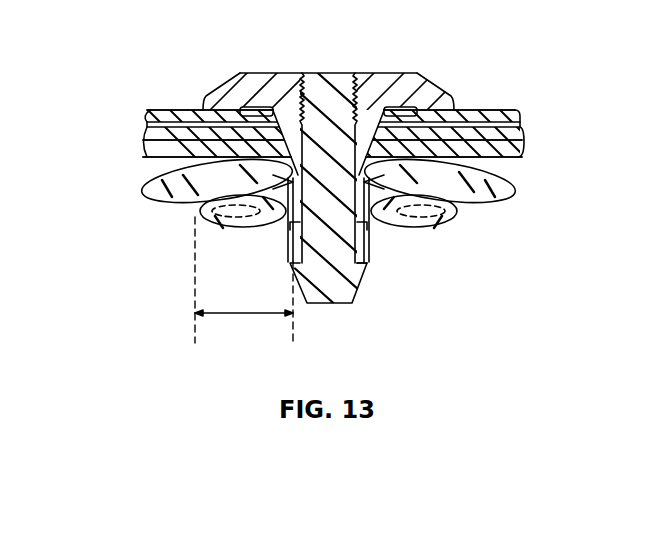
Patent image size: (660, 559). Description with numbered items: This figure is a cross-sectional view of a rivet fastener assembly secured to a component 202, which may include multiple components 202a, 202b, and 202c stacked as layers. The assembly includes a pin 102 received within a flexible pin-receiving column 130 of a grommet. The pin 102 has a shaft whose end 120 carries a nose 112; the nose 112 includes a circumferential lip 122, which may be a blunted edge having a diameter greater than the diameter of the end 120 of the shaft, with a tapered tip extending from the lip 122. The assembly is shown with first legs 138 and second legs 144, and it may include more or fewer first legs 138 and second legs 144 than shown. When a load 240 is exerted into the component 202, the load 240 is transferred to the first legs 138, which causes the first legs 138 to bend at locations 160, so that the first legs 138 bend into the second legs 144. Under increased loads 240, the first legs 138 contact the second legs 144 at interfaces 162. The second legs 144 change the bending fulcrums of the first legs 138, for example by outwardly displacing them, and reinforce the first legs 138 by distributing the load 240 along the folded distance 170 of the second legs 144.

The load 240 is at (162, 63).
The interfaces 162 is at (236, 188).
The component 202 is at (528, 108).
The component 202a is at (510, 108).
The component 202b is at (510, 137).
The component 202c is at (505, 150).
The pin 102 is at (364, 292).
The nose 112 is at (337, 304).
The circumferential lip 122 is at (372, 272).
The flexible pin-receiving column 130 is at (289, 248).
The end of the shaft 120 is at (338, 262).
The first legs 138 is at (165, 182).
The locations 160 is at (240, 216).
The second legs 144 is at (334, 73).
The folded distance 170 is at (247, 315).